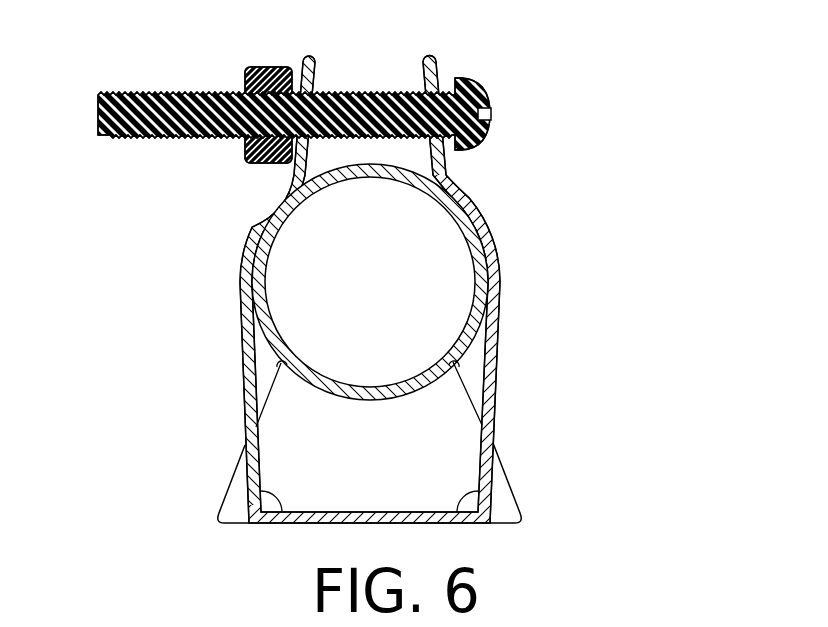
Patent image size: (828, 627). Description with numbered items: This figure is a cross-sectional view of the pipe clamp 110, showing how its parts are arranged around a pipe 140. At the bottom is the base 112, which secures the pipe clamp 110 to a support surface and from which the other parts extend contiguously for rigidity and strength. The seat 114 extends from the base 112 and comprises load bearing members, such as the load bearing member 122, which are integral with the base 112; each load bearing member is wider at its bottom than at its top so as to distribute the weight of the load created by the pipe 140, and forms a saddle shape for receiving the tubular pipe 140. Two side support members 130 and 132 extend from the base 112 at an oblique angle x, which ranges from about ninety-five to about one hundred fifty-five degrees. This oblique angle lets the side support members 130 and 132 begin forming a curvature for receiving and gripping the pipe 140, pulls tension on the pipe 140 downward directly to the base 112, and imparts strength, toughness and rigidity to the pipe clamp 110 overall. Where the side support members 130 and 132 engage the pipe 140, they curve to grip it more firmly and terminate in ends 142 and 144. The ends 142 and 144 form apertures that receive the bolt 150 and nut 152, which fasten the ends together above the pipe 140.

The pipe clamp 110 is at (576, 146).
The base 112 is at (482, 524).
The seat 114 is at (509, 487).
The load bearing member 122 is at (365, 398).
The side support member 130 is at (247, 360).
The side support member 132 is at (487, 387).
The pipe 140 is at (484, 263).
The end 142 is at (314, 55).
The end 144 is at (437, 80).
The bolt 150 is at (379, 92).
The nut 152 is at (267, 66).